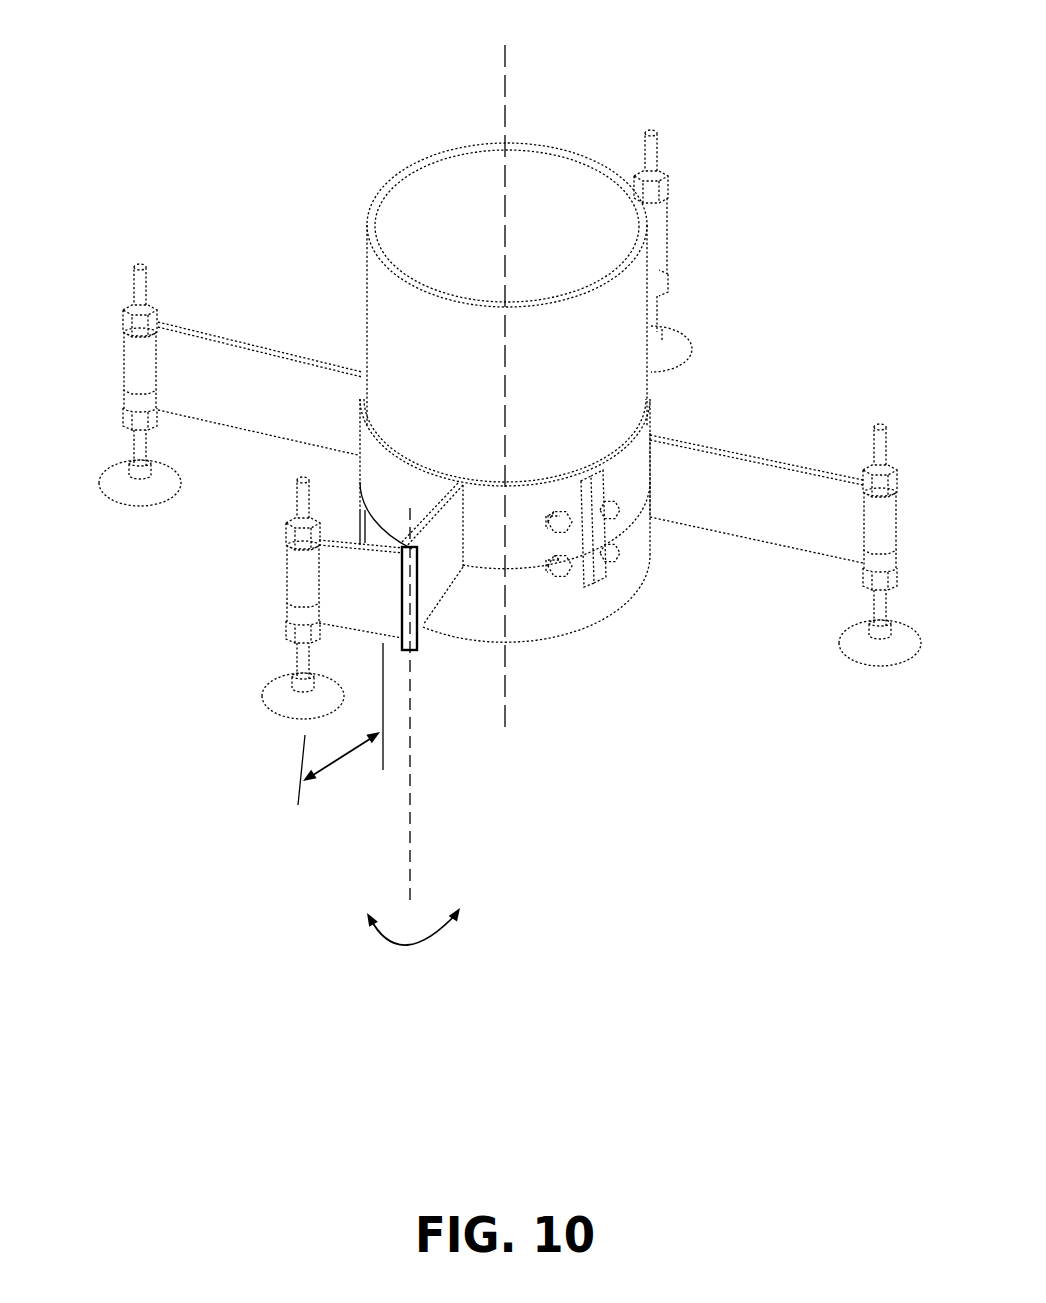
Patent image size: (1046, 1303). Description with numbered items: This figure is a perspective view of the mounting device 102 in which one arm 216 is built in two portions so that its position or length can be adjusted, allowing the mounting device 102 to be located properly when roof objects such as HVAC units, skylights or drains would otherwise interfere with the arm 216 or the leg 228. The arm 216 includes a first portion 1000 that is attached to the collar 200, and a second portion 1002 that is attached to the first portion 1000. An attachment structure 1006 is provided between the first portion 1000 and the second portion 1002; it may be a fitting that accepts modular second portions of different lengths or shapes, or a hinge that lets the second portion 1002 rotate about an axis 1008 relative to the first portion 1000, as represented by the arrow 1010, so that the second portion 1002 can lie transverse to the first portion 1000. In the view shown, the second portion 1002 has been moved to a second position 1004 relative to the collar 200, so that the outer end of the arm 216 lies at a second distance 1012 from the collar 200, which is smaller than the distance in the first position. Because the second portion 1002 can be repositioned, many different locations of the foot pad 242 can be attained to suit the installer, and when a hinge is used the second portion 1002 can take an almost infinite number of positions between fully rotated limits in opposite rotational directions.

The mounting device 102 is at (312, 92).
The collar 200 is at (635, 545).
The arm 216 is at (200, 318).
The leg 228 is at (285, 597).
The foot pad 242 is at (267, 687).
The first portion 1000 is at (417, 652).
The second portion 1002 is at (352, 537).
The second position 1004 is at (243, 720).
The attachment structure 1006 is at (443, 593).
The axis 1008 is at (412, 852).
The arrow 1010 is at (430, 943).
The second distance 1012 is at (333, 762).